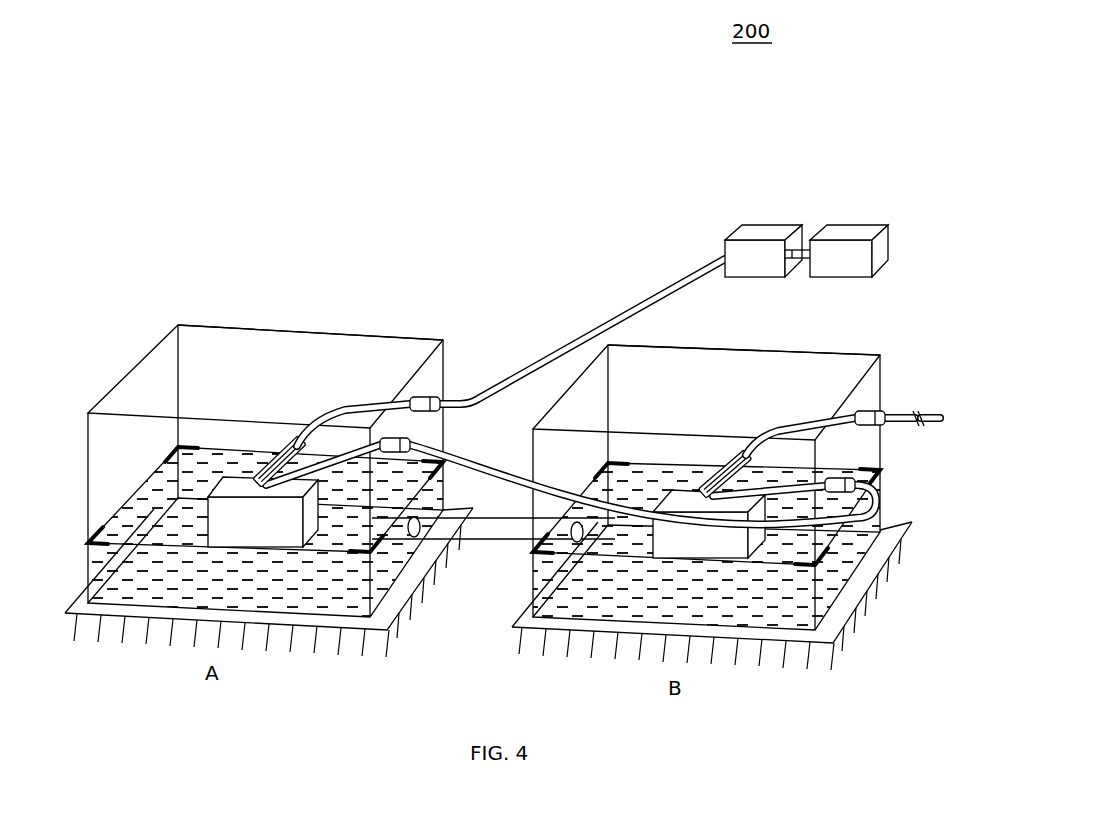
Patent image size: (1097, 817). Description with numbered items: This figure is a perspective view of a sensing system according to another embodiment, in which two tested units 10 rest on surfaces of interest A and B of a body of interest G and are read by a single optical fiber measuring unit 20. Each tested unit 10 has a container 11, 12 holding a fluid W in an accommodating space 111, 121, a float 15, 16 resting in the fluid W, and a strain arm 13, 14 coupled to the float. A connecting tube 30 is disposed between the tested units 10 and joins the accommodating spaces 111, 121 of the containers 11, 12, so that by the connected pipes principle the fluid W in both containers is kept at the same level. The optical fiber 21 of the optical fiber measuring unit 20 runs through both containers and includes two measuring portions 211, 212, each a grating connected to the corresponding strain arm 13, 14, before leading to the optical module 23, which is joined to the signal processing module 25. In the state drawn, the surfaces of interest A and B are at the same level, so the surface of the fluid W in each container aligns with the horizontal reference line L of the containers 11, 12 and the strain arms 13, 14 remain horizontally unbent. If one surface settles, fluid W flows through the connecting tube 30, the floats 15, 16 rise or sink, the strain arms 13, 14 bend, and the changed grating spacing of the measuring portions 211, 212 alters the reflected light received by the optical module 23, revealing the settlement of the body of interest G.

The optical fiber measuring unit 20 is at (805, 183).
The optical module 23 is at (753, 233).
The signal processing module 25 is at (848, 233).
The optical fiber 21 is at (500, 386).
The tested unit 10 is at (488, 431).
The container 11 is at (88, 441).
The container 12 is at (868, 444).
The accommodating space 111 is at (333, 343).
The accommodating space 121 is at (679, 366).
The strain arm 13 is at (262, 466).
The strain arm 14 is at (703, 487).
The float 15 is at (218, 487).
The float 16 is at (592, 488).
The measuring portion 211 is at (280, 446).
The measuring portion 212 is at (729, 449).
The connecting tube 30 is at (490, 540).
The horizontal reference line L is at (88, 545).
The fluid W is at (95, 578).
The body of interest G is at (108, 642).